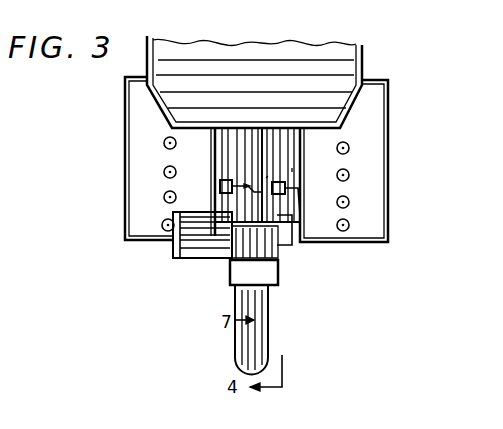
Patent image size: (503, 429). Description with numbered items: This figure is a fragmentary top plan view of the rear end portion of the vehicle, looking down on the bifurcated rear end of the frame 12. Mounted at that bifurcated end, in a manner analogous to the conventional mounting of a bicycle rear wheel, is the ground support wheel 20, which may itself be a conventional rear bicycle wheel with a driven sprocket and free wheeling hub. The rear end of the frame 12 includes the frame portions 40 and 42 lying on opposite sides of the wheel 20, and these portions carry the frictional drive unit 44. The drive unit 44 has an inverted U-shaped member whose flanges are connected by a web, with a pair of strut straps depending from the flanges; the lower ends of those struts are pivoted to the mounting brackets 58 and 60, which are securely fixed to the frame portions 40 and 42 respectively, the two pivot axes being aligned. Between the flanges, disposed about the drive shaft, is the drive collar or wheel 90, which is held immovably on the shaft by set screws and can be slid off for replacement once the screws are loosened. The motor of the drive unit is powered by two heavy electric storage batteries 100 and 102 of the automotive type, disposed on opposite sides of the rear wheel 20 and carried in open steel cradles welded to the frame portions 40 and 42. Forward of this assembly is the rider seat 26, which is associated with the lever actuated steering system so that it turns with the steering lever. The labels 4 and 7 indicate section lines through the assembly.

The frame 12 is at (233, 147).
The section line / shaft 4 is at (266, 178).
The rider seat 26 is at (345, 72).
The frame portion 40 is at (236, 160).
The frame portion 42 is at (298, 182).
The section line 7 is at (292, 168).
The mounting bracket 58 is at (232, 173).
The mounting bracket 60 is at (296, 197).
The electric storage battery 100 is at (128, 135).
The electric storage battery 102 is at (383, 212).
The frictional drive unit 44 is at (193, 258).
The drive collar 90 is at (278, 258).
The ground support wheel 20 is at (222, 368).